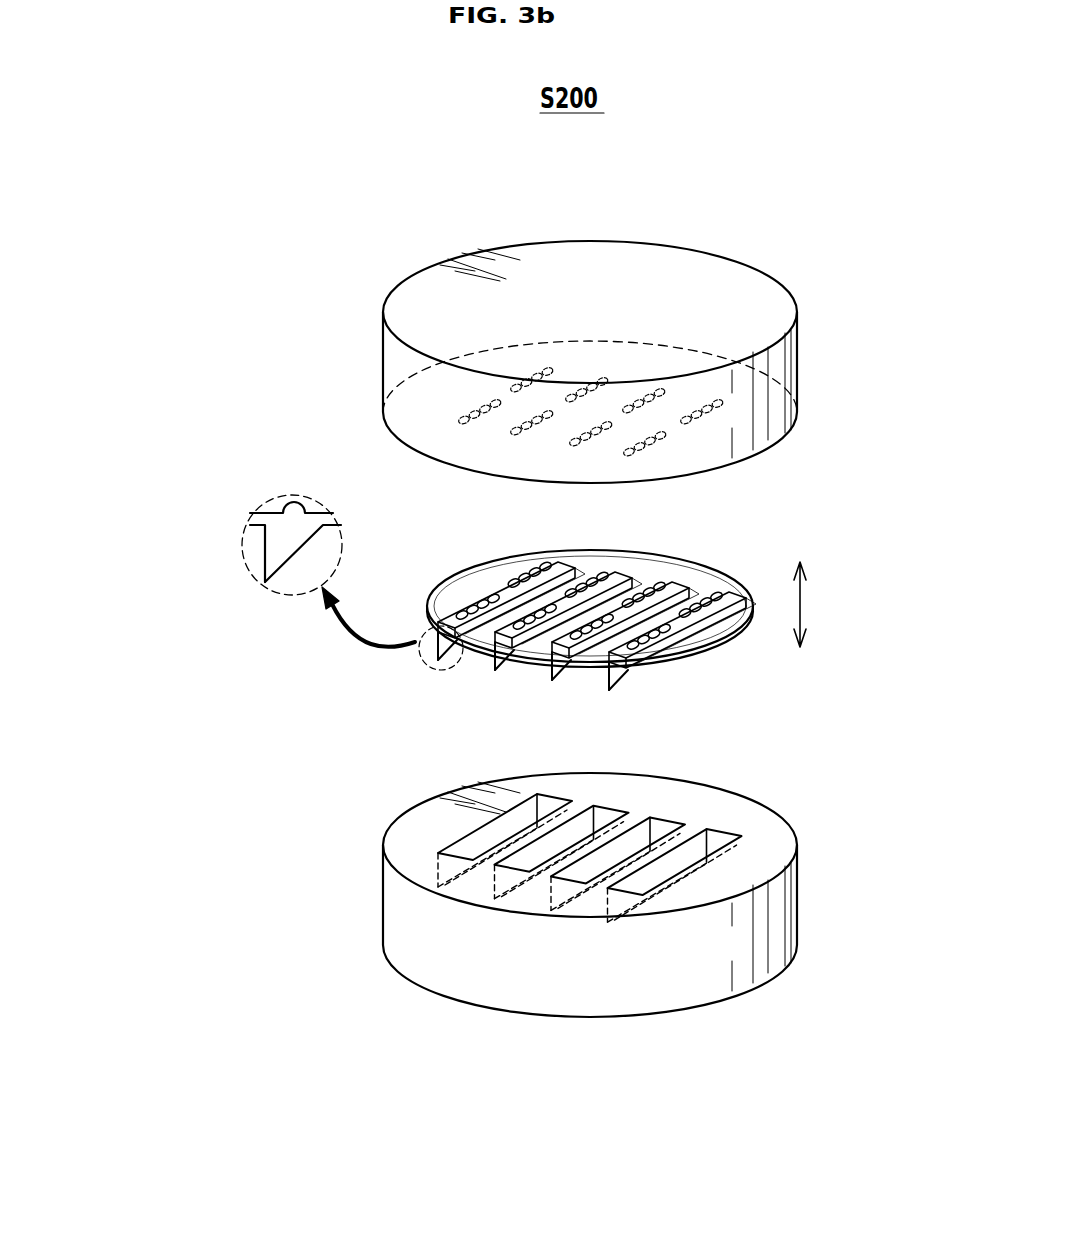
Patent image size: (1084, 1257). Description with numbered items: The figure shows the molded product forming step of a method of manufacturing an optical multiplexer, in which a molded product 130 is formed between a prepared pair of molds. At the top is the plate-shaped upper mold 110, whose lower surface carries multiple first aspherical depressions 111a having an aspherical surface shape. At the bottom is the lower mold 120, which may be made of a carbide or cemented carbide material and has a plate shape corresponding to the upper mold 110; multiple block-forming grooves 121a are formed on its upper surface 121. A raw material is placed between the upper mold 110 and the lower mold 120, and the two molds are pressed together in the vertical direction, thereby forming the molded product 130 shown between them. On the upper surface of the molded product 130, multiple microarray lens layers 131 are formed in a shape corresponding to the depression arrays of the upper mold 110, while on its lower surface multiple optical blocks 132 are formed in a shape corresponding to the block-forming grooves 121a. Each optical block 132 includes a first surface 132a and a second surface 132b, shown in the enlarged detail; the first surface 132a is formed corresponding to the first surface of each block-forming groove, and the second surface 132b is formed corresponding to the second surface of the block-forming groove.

The upper mold 110 is at (533, 317).
The first aspherical depressions 111a is at (455, 420).
The molded product 130 is at (489, 588).
The microarray lens layers 131 is at (483, 590).
The optical blocks 132 is at (389, 622).
The first surface 132a is at (262, 550).
The second surface 132b is at (304, 548).
The lower mold 120 is at (573, 929).
The upper surface 121 is at (732, 802).
The block-forming grooves 121a is at (487, 833).